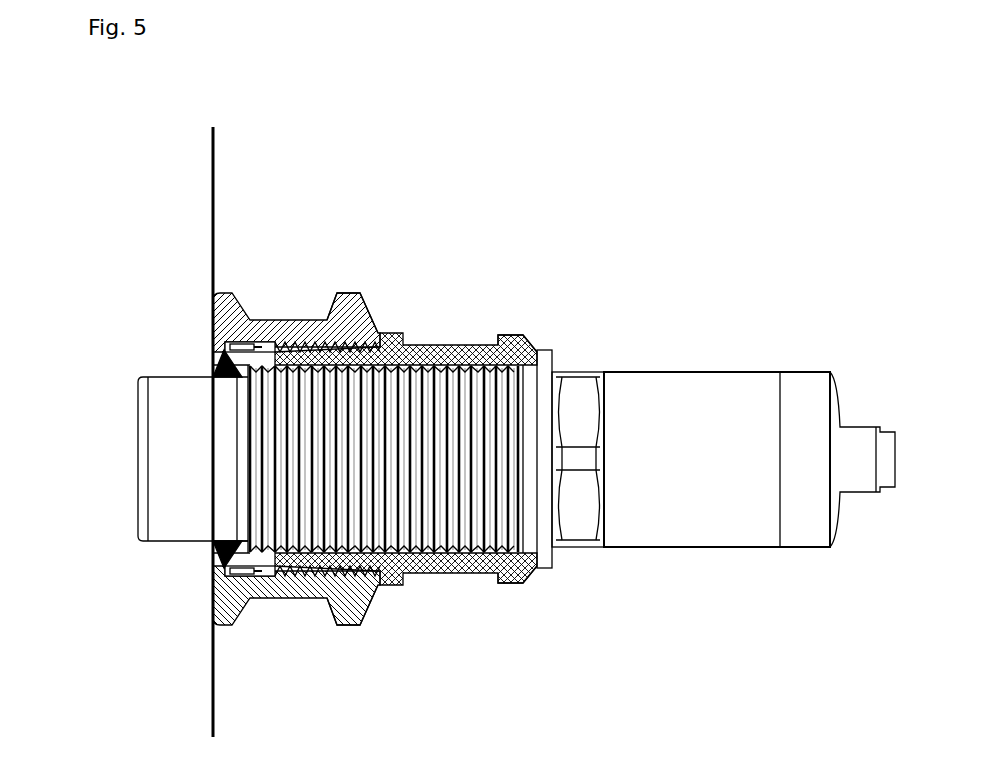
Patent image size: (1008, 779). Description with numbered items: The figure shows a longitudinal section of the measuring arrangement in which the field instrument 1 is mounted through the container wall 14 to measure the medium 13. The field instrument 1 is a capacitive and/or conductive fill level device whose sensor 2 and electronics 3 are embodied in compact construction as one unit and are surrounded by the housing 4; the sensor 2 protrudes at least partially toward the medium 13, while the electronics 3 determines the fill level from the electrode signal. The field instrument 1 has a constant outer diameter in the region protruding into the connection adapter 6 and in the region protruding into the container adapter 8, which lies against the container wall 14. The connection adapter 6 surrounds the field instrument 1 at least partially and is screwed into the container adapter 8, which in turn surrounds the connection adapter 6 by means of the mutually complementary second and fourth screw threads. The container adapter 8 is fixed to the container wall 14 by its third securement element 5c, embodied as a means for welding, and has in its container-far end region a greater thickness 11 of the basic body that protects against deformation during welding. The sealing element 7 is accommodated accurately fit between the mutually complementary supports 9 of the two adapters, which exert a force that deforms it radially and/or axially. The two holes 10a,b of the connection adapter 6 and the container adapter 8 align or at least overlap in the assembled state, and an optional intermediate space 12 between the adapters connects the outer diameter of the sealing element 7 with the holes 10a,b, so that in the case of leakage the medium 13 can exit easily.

The field instrument 1 is at (792, 303).
The sensor 2 is at (120, 442).
The electronics 3 is at (717, 459).
The housing 4 is at (680, 357).
The third securement element 5c is at (228, 283).
The connection adapter 6 is at (473, 282).
The sealing element 7 is at (202, 552).
The container adapter 8 is at (278, 256).
The supports 9 is at (384, 459).
The holes 10a,b is at (258, 605).
The greater thickness 11 is at (347, 283).
The intermediate space 12 is at (213, 335).
The medium 13 is at (90, 395).
The container wall 14 is at (215, 153).